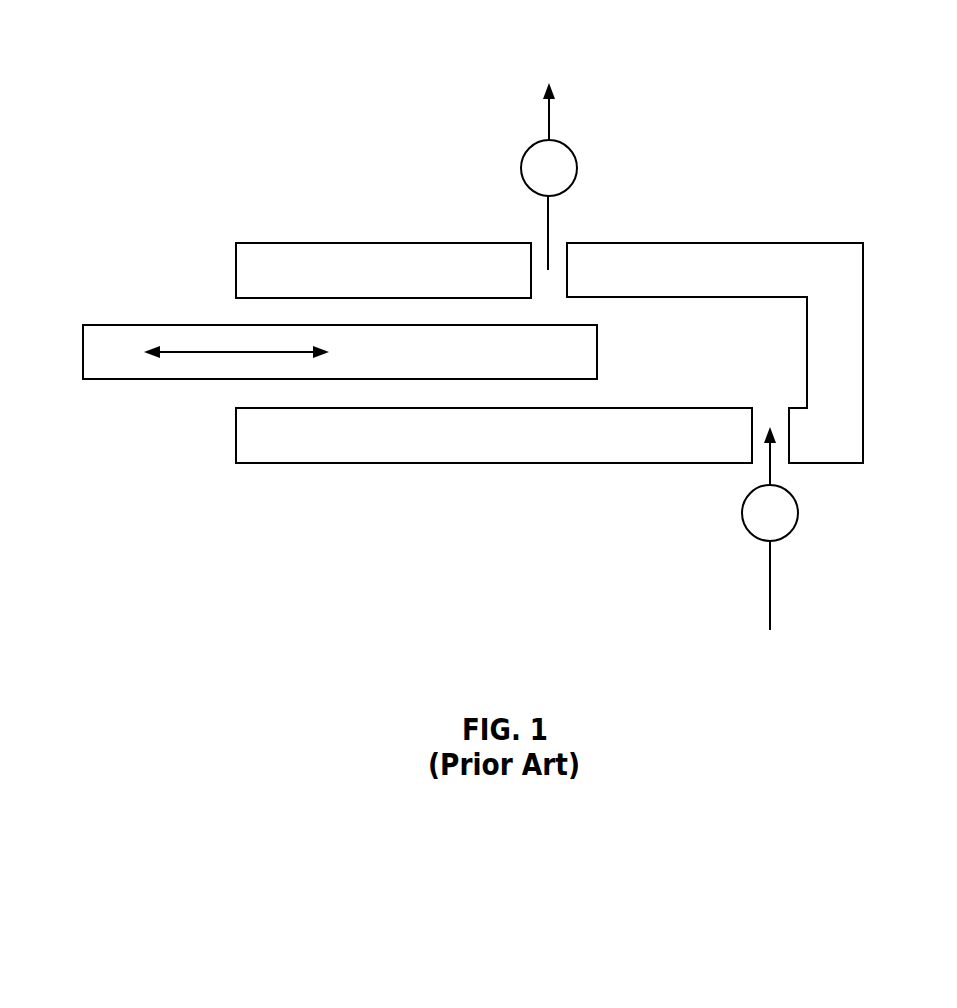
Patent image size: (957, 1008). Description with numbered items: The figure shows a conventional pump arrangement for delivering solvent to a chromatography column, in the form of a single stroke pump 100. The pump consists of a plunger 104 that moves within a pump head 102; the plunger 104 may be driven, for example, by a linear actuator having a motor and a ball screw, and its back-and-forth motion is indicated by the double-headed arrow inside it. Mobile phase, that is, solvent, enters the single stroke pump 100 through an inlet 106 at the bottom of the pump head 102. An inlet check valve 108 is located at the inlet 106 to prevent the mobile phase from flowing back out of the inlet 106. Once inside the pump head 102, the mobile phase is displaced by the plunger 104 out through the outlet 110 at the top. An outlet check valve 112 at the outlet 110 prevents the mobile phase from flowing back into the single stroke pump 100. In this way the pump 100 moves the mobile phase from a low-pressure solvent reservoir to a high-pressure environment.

The single stroke pump 100 is at (275, 80).
The pump head 102 is at (833, 260).
The plunger 104 is at (498, 350).
The inlet 106 is at (782, 465).
The inlet check valve 108 is at (742, 508).
The outlet 110 is at (561, 240).
The outlet check valve 112 is at (577, 168).